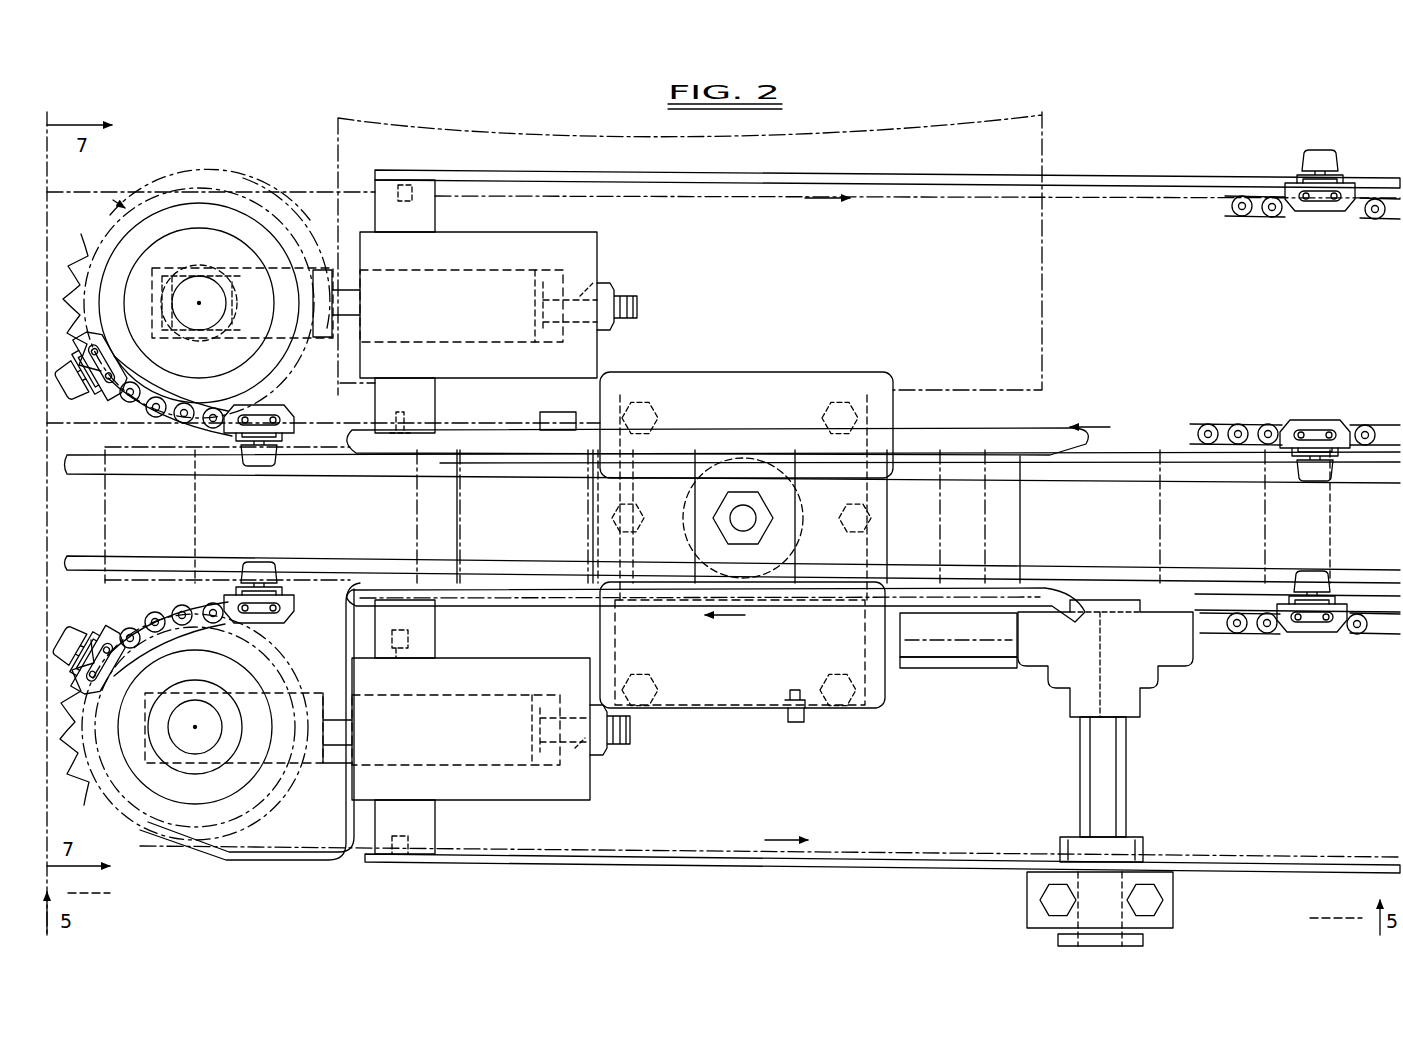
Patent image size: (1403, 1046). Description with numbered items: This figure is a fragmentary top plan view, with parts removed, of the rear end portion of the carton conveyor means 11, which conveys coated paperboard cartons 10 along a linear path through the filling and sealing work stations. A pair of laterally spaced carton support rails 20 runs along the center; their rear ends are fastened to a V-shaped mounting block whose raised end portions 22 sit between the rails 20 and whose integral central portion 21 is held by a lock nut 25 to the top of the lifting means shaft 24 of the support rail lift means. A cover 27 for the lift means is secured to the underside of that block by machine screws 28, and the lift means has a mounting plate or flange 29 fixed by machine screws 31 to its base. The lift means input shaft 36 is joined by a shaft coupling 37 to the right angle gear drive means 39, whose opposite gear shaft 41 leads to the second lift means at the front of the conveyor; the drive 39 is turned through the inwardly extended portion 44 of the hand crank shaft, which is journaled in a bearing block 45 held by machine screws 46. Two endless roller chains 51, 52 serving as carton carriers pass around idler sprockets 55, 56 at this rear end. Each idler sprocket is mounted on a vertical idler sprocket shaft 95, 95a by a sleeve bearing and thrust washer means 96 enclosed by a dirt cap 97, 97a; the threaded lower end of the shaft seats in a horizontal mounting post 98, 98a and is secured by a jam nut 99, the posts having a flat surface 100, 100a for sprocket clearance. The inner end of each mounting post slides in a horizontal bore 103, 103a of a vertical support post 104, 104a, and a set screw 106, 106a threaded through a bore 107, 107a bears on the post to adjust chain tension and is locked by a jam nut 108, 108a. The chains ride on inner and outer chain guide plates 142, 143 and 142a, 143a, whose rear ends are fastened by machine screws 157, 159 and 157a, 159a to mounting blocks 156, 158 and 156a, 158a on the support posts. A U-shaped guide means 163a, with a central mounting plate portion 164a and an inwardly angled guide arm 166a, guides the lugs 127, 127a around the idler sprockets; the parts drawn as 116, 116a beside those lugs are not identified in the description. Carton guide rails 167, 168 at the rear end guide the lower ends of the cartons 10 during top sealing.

The carton 10 is at (924, 533).
The carton conveyor means 11 is at (1226, 170).
The carton support rails 20 is at (1072, 475).
The central portion 21 is at (722, 502).
The raised end portions 22 is at (700, 560).
The lifting means shaft 24 is at (748, 520).
The lock nut 25 is at (760, 525).
The cover 27 is at (822, 372).
The machine screws 28 is at (635, 523).
The mounting plate or flange 29 is at (848, 712).
The machine screws 31 is at (658, 421).
The input shaft 36 is at (905, 638).
The shaft coupling 37 is at (970, 660).
The right angle gear drive means 39 is at (1168, 672).
The gear shaft 41 is at (1370, 650).
The inwardly extended portion 44 is at (1112, 778).
The bearing block 45 is at (1030, 904).
The machine screws 46 is at (1052, 896).
The conveyor roller chain 51 is at (148, 417).
The conveyor roller chain 52 is at (142, 616).
The idler sprocket 55 is at (92, 280).
The idler sprocket 56 is at (100, 760).
The idler sprocket shaft 95 is at (201, 298).
The idler sprocket shaft 95a is at (187, 740).
The sleeve bearing and thrust washer means 96 is at (240, 262).
The dirt cap 97 is at (278, 383).
The dirt cap 97a is at (230, 695).
The horizontal mounting post 98 is at (326, 268).
The horizontal mounting post 98a is at (335, 690).
The jam nut 99 is at (186, 376).
The flat surface 100 is at (345, 299).
The flat surface 100a is at (340, 739).
The horizontal bore 103 is at (492, 268).
The horizontal bore 103a is at (470, 765).
The vertical support post 104 is at (600, 238).
The vertical support post 104a is at (462, 802).
The set screw 106 is at (640, 307).
The set screw 106a is at (633, 735).
The threaded bore 107 is at (594, 282).
The threaded bore 107a is at (575, 750).
The jam nut 108 is at (604, 326).
The jam nut 108a is at (598, 756).
The carrier dog 116 is at (108, 340).
The carrier dog 116a is at (127, 672).
The lug 127 is at (80, 395).
The lug 127a is at (86, 636).
The inner chain guide plate 142 is at (1115, 445).
The chain guide plate 142a is at (1228, 592).
The outer chain guide plate 143 is at (1122, 182).
The chain guide plate 143a is at (1225, 874).
The mounting block 156 is at (430, 389).
The mounting block 156a is at (430, 625).
The machine screws 157 is at (402, 420).
The machine screws 157a is at (404, 652).
The mounting block 158 is at (430, 216).
The mounting block 158a is at (430, 832).
The machine screws 159 is at (406, 188).
The machine screws 159a is at (400, 856).
The U-shaped guide means 163a is at (252, 861).
The central mounting plate portion 164a is at (345, 787).
The guide arm 166a is at (346, 590).
The carton guide rail 167 is at (972, 442).
The carton guide rail 168 is at (1080, 618).